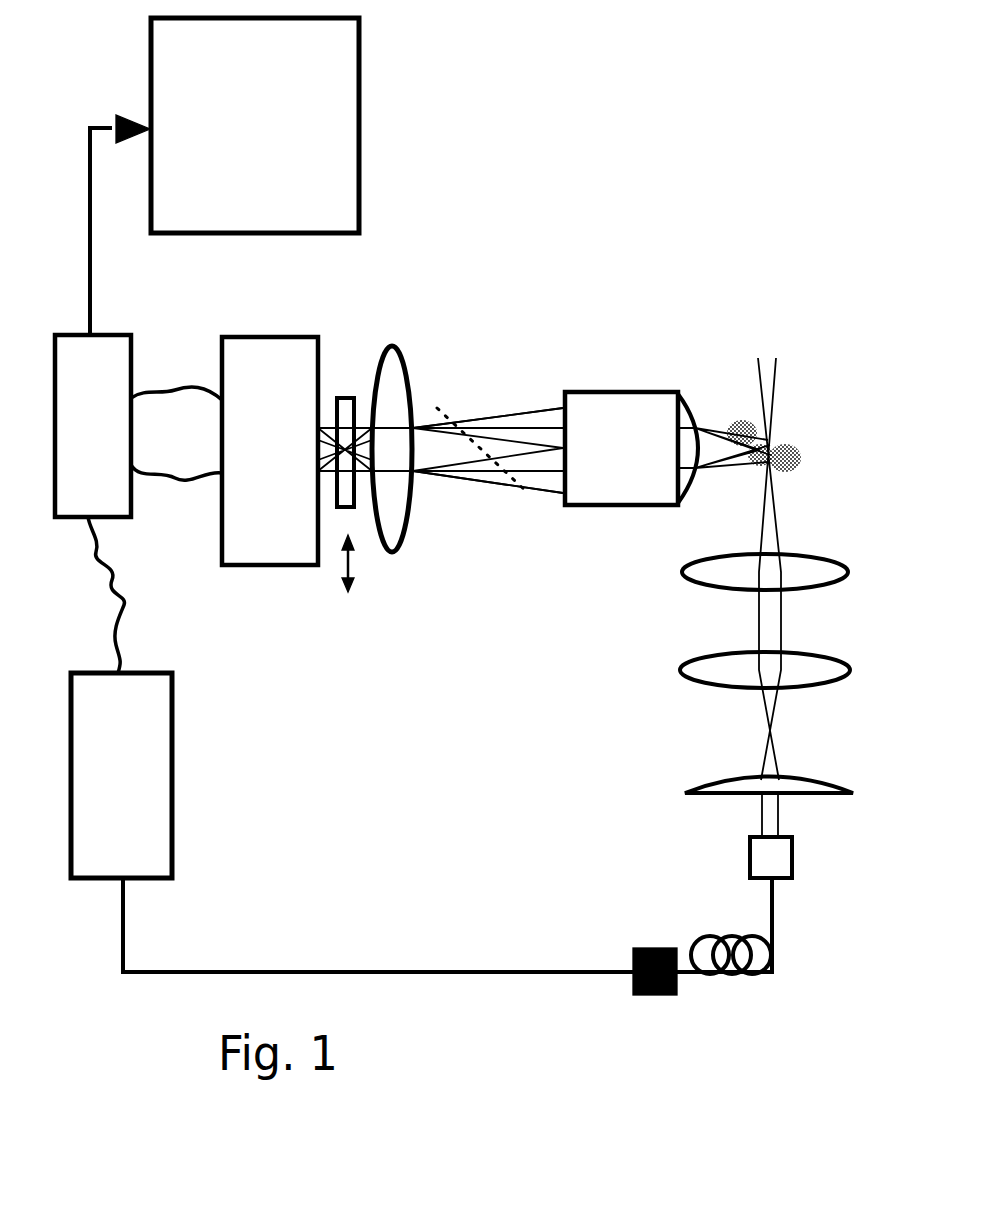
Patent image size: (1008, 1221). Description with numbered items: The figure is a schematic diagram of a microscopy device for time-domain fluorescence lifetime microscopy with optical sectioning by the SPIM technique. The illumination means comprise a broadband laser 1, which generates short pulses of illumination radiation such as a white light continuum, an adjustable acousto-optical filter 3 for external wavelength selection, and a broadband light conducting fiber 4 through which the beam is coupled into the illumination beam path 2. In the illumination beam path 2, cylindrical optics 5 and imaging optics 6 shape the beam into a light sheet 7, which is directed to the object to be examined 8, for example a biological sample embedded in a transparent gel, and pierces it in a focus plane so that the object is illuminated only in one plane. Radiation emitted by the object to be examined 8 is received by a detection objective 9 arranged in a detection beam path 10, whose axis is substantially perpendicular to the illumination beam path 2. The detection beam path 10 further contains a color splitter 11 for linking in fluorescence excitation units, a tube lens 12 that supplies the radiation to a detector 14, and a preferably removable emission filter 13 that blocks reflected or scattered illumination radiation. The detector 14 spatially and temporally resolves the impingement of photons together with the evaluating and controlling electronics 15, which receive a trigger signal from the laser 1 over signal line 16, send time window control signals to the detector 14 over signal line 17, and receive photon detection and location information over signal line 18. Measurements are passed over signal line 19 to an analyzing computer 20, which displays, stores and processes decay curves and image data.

The broadband laser 1 is at (124, 697).
The illumination beam path 2 is at (784, 818).
The adjustable acousto-optical filter 3 is at (660, 995).
The broadband light conducting fiber 4 is at (775, 925).
The cylindrical optics 5 is at (852, 786).
The imaging optics 6 is at (715, 670).
The light sheet 7 is at (772, 532).
The object to be examined 8 is at (800, 458).
The detection objective 9 is at (667, 448).
The detection beam path 10 is at (543, 437).
The color splitter 11 is at (475, 448).
The tube lens 12 is at (400, 550).
The emission filter 13 is at (345, 395).
The detector 14 is at (270, 451).
The evaluating and controlling electronics 15 is at (93, 426).
The signal line 16 is at (130, 597).
The signal line 17 is at (165, 485).
The signal line 18 is at (163, 388).
The signal line 19 is at (92, 232).
The analyzing computer 20 is at (364, 78).